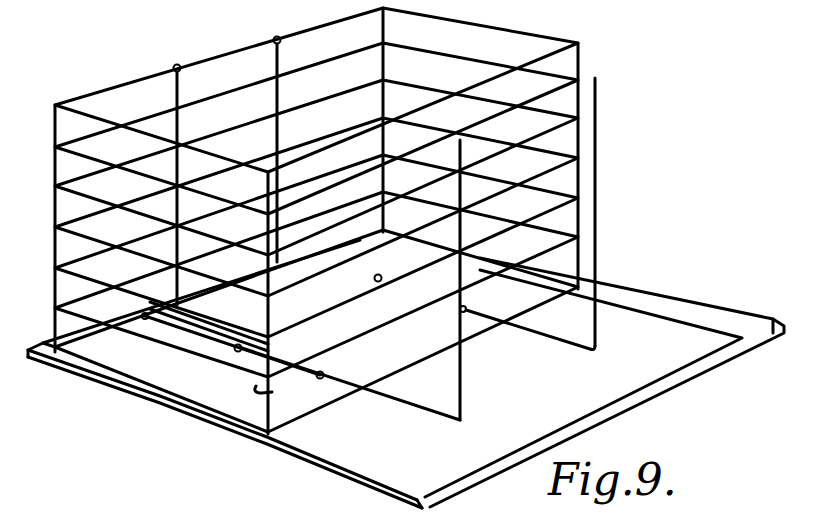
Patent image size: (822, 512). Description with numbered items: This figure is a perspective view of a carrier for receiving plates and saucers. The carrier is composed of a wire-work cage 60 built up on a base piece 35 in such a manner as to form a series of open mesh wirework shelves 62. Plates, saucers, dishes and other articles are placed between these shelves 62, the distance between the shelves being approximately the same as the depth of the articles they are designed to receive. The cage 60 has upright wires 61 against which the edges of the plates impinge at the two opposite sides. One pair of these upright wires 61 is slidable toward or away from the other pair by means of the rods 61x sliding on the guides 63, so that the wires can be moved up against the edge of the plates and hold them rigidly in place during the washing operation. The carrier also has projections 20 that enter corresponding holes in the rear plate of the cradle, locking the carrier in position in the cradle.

The wire-work cage 60 is at (433, 20).
The upright wires 61 is at (277, 62).
The rods 61x is at (397, 398).
The open mesh wirework shelves 62 is at (268, 392).
The guides 63 is at (183, 332).
The projections 20 is at (44, 352).
The base piece 35 is at (653, 303).